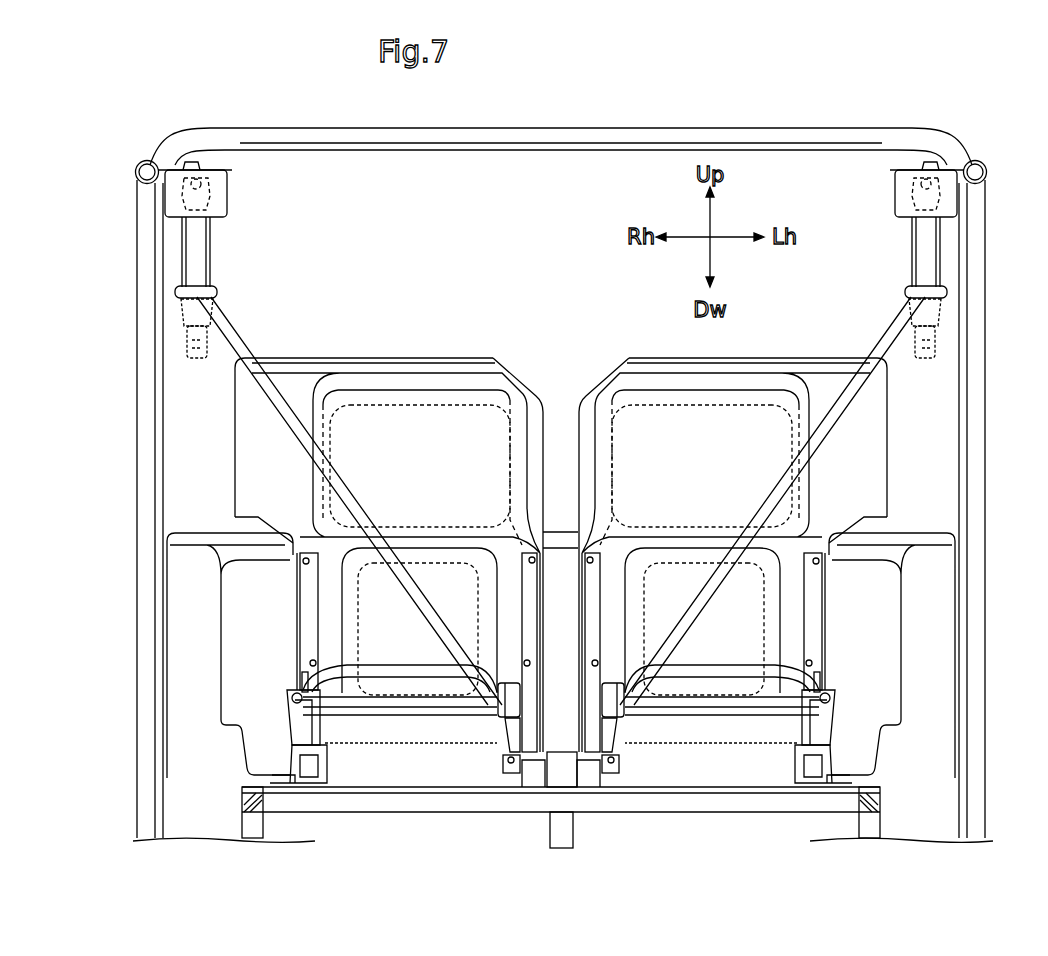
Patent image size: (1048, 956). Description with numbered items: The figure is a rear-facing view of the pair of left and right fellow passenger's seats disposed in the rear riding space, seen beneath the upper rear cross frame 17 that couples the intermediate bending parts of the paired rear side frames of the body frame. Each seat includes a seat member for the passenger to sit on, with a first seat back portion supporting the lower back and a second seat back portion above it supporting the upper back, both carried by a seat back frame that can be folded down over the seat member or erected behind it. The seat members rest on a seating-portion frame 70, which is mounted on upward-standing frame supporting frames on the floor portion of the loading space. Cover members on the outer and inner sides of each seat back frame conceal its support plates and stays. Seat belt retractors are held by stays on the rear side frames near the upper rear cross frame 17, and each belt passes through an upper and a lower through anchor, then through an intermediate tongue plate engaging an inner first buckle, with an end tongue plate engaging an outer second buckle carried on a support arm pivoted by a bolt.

The upper rear cross frame 17 is at (610, 140).
The seating-portion frame 70 is at (705, 806).